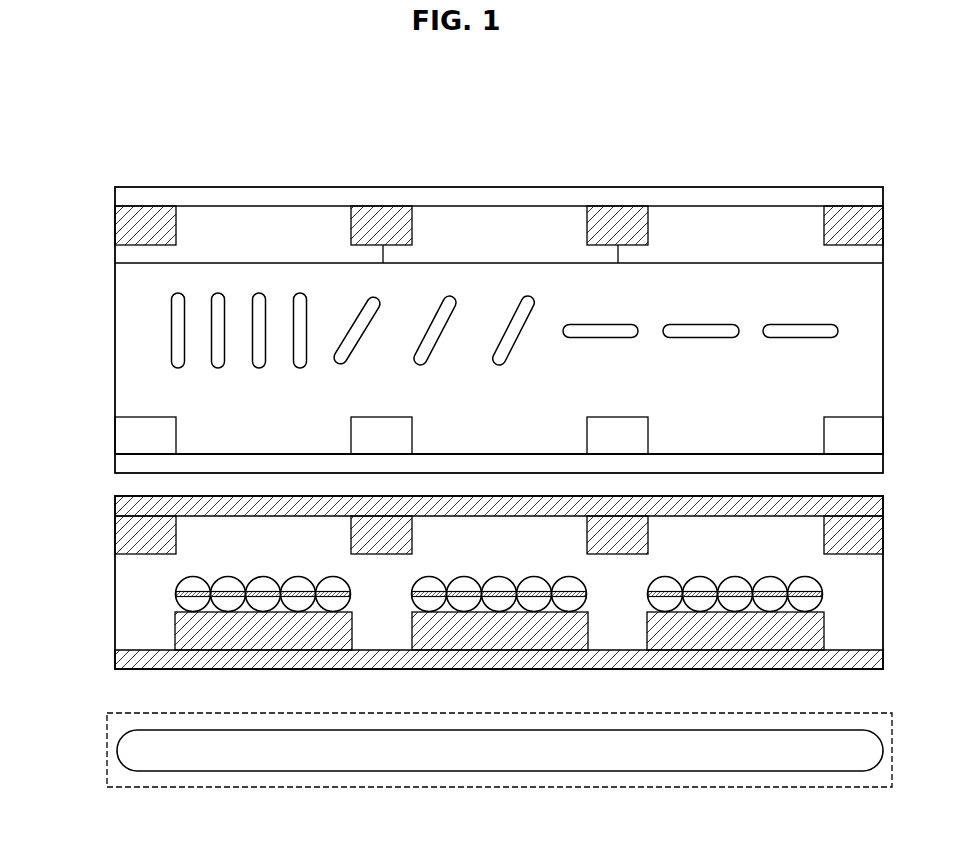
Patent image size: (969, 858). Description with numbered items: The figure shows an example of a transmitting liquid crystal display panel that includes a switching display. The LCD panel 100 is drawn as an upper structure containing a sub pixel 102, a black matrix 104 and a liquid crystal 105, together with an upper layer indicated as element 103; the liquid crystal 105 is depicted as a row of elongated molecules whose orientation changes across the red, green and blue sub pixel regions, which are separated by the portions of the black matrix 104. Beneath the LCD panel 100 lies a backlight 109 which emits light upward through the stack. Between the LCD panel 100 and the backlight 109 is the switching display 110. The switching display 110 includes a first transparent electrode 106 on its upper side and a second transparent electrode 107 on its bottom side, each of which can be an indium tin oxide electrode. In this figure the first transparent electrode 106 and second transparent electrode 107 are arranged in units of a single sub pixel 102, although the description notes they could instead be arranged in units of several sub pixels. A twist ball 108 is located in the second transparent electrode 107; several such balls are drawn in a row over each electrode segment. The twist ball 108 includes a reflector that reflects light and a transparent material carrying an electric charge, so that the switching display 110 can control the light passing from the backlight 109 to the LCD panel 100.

The LCD panel 100 is at (115, 370).
The sub pixel 102 is at (297, 218).
The upper substrate 103 is at (258, 207).
The black matrix 104 is at (382, 215).
The liquid crystal 105 is at (173, 317).
The first transparent electrode 106 is at (117, 502).
The second transparent electrode 107 is at (117, 658).
The twist ball 108 is at (263, 577).
The backlight 109 is at (407, 758).
The switching display 110 is at (115, 582).